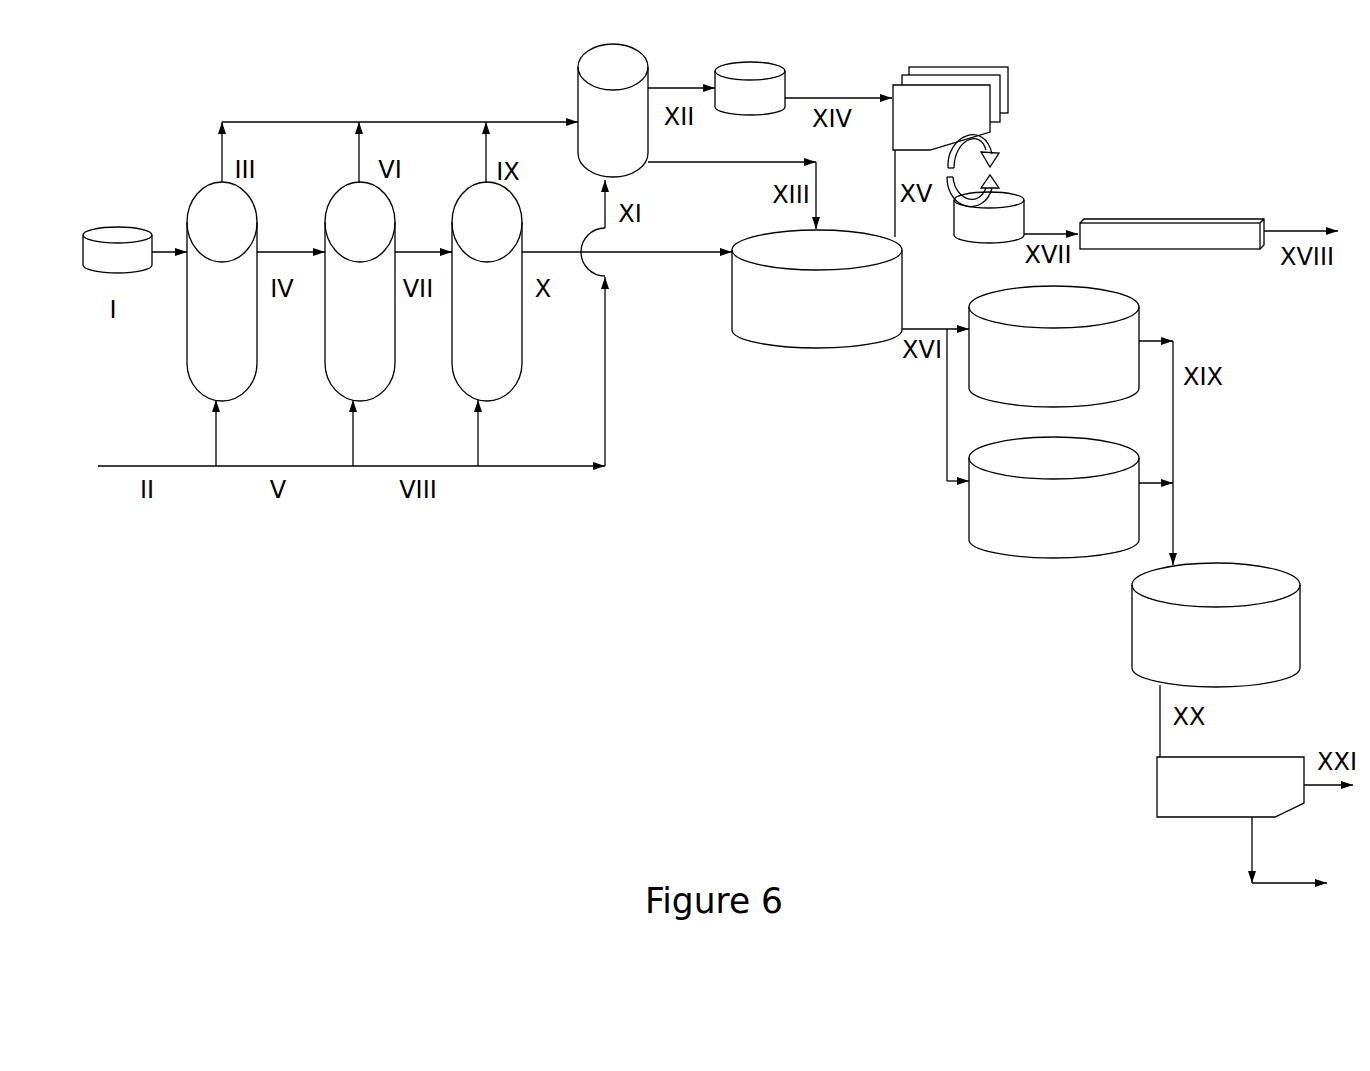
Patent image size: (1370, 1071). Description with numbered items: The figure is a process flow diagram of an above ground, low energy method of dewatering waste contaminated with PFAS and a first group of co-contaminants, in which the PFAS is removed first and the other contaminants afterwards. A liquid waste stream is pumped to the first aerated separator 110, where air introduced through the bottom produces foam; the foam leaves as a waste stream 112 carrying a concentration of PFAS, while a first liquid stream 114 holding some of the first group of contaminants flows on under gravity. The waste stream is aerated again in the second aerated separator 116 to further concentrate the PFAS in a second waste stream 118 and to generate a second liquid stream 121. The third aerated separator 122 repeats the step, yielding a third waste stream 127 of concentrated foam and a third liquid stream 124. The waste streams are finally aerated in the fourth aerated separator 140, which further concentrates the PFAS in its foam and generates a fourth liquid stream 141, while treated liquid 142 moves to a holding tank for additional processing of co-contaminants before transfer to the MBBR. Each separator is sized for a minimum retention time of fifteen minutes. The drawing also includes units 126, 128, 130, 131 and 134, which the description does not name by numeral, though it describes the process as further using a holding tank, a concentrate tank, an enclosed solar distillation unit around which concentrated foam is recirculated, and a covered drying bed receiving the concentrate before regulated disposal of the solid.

The first aerated separator 110 is at (200, 348).
The waste stream 112 is at (220, 150).
The first liquid stream 114 is at (290, 250).
The second aerated separator 116 is at (338, 348).
The second waste stream 118 is at (358, 146).
The second liquid stream 121 is at (420, 252).
The third aerated separator 122 is at (465, 348).
The third liquid stream 124 is at (557, 252).
The mixing tank 126 is at (797, 320).
The third waste stream 127 is at (485, 143).
The gas storage vessel 128 is at (749, 59).
The filter press 130 is at (915, 122).
The return line 131 is at (855, 230).
The conveyor 134 is at (1173, 220).
The fourth aerated separator 140 is at (592, 152).
The fourth liquid stream 141 is at (679, 84).
The treated liquid 142 is at (690, 165).